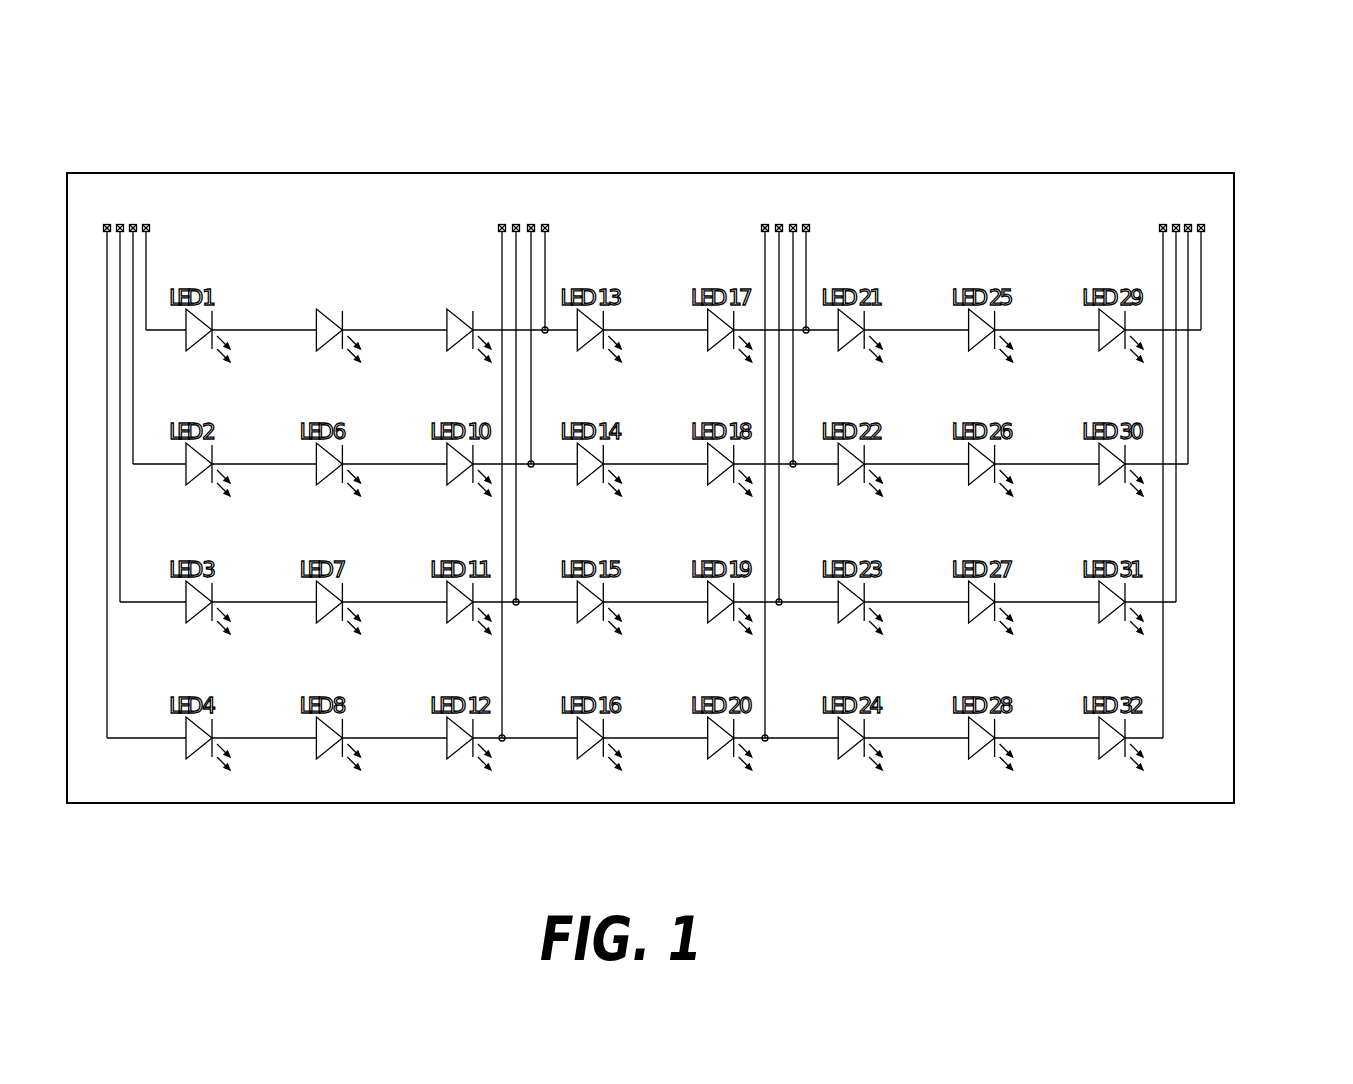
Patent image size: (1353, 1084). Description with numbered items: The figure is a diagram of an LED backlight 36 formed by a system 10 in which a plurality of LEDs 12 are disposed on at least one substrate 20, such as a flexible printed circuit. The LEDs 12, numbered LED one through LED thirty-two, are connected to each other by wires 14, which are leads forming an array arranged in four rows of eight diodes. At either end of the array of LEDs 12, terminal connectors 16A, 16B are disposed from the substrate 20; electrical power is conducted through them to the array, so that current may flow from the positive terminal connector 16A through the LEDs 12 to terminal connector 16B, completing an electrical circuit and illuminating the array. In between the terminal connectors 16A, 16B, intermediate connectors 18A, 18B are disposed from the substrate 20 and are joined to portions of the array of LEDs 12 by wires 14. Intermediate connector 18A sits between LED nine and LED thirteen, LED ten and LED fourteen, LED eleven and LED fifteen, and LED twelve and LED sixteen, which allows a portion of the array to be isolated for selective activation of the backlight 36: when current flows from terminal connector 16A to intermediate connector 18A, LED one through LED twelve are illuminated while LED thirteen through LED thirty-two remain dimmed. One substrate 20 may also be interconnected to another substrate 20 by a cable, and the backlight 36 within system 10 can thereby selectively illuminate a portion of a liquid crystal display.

The system 10 is at (1280, 160).
The LEDs 12 is at (458, 290).
The wires 14 is at (910, 327).
The terminal connector 16A is at (127, 213).
The terminal connector 16B is at (1192, 200).
The intermediate connector 18A is at (518, 212).
The intermediate connector 18B is at (779, 213).
The substrate 20 is at (1235, 605).
The LED backlight 36 is at (1287, 385).